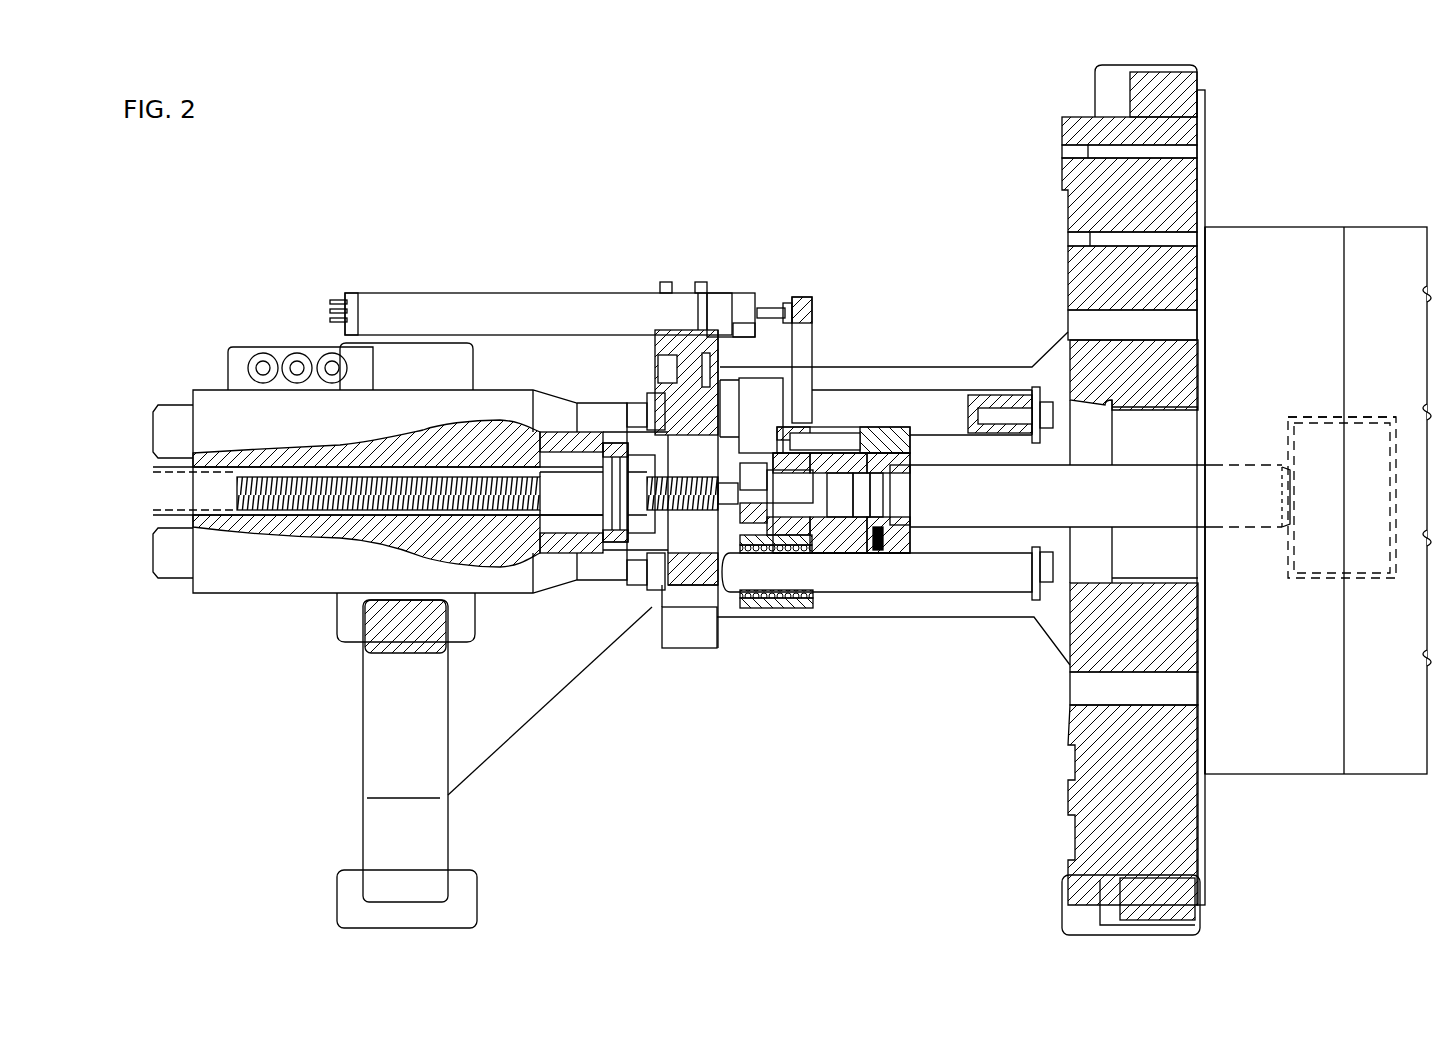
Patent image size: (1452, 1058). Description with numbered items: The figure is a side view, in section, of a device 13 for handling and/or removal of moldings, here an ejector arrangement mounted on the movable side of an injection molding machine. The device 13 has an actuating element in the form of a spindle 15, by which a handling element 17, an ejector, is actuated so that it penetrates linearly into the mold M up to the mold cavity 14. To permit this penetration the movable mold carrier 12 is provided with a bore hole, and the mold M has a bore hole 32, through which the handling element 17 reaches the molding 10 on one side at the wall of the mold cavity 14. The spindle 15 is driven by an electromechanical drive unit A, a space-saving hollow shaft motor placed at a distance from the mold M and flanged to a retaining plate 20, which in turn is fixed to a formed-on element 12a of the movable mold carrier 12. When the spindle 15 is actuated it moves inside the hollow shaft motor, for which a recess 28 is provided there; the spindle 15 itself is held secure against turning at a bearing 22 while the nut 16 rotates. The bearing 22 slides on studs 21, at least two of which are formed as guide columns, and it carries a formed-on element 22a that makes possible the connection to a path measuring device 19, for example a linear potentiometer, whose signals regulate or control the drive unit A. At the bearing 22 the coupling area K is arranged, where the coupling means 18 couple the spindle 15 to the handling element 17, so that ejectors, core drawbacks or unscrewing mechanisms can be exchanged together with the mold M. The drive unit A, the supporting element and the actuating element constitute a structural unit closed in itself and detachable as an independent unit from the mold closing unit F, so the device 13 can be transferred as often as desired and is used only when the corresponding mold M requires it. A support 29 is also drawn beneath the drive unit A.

The recess 28 is at (182, 495).
The drive unit A is at (300, 408).
The path measuring device 19 is at (548, 310).
The formed on element 12a is at (634, 385).
The retaining plate 20 is at (693, 573).
The spindle 15 is at (258, 512).
The nut 16 is at (560, 540).
The support post 29 is at (378, 713).
The formed on element 22a is at (793, 300).
The bearing 22 is at (752, 405).
The coupling means 18 is at (843, 497).
The coupling area K is at (852, 562).
The studs 21 is at (925, 410).
The device for handling and/or removal of moldings 13 is at (897, 357).
The handling element 17 is at (1020, 504).
The movable mold carrier 12 is at (1210, 157).
The mold M is at (1282, 260).
The mold closing unit F is at (1315, 224).
The molding 10 is at (1342, 497).
The mold cavity 14 is at (1318, 415).
The bore hole 32 is at (1242, 545).